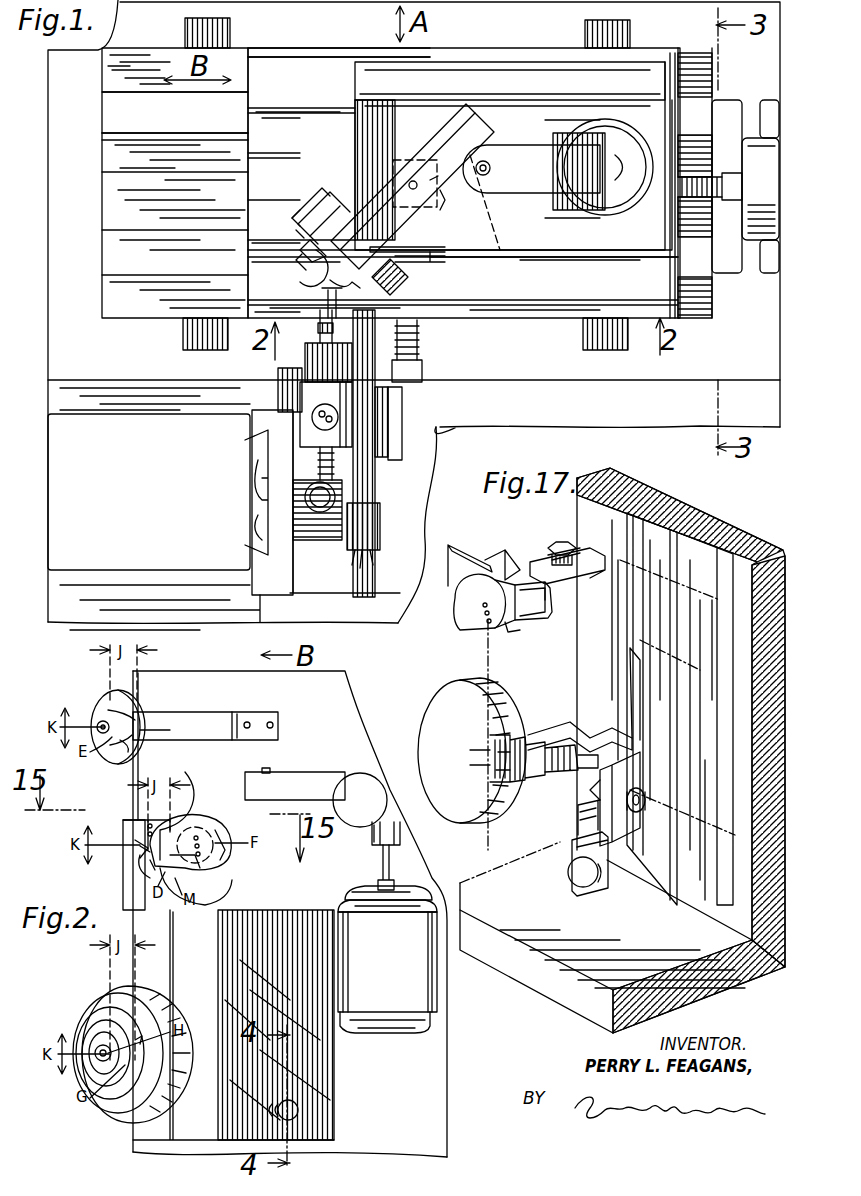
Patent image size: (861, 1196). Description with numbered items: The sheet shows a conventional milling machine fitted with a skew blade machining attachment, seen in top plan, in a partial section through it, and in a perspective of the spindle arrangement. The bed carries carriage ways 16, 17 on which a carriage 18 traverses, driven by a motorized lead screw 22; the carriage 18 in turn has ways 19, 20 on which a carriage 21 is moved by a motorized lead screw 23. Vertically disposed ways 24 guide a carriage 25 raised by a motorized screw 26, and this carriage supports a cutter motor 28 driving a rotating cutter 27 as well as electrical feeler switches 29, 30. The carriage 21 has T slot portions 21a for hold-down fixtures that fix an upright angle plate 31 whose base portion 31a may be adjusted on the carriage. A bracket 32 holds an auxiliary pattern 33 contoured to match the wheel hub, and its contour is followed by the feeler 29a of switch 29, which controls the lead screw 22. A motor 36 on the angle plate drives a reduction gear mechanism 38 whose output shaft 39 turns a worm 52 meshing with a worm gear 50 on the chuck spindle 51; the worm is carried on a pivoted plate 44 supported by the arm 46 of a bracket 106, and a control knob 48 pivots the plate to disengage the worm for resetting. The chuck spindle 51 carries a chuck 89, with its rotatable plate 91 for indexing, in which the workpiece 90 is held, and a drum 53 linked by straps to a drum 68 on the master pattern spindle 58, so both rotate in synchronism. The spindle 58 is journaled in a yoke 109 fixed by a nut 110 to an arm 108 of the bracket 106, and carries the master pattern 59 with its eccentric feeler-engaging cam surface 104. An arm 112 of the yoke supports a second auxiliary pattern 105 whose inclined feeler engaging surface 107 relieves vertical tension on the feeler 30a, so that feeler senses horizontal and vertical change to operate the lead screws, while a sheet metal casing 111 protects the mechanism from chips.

In FIG. 1, the carriage way 16 is at (600, 340).
In FIG. 1, the carriage way 17 is at (192, 340).
In FIG. 1, the carriage 18 is at (150, 52).
In FIG. 1, the way 19 is at (197, 125).
In FIG. 1, the way 20 is at (192, 240).
In FIG. 1, the carriage 21 is at (250, 172).
In FIG. 1, the T slot portions 21a is at (310, 60).
In FIG. 1, the motorized lead screw 22 is at (414, 336).
In FIG. 1, the motorized lead screw 23 is at (706, 178).
In FIG. 1, the vertically disposed ways 24 is at (258, 486).
In FIG. 1, the carriage 25 is at (280, 581).
In FIG. 1, the motorized screw 26 is at (335, 492).
In FIG. 1, the rotating cutter 27 is at (318, 326).
In FIG. 2, the rotating cutter 27 is at (98, 1058).
In FIG. 1, the cutter motor 28 is at (280, 388).
In FIG. 1, the electrical feeler switch 29 is at (310, 346).
In FIG. 1, the feeler 29a is at (325, 300).
In FIG. 2, the feeler 29a is at (106, 720).
In FIG. 1, the electrical feeler switch 30 is at (388, 290).
In FIG. 1, the feeler 30a is at (330, 282).
In FIG. 2, the feeler 30a is at (130, 850).
In FIG. 1, the angle plate 31 is at (455, 85).
In FIG. 17, the angle plate 31 is at (712, 526).
In FIG. 1, the base portion 31a is at (505, 255).
In FIG. 1, the bracket 32 is at (420, 136).
In FIG. 2, the bracket 32 is at (222, 700).
In FIG. 1, the auxiliary pattern 33 is at (305, 247).
In FIG. 2, the auxiliary pattern 33 is at (132, 700).
In FIG. 1, the motor 36 is at (608, 218).
In FIG. 2, the motor 36 is at (384, 948).
In FIG. 1, the reduction gear mechanism 38 is at (538, 150).
In FIG. 2, the reduction gear mechanism 38 is at (328, 778).
In FIG. 1, the output shaft 39 is at (483, 160).
In FIG. 2, the output shaft 39 is at (270, 768).
In FIG. 17, the plate 44 is at (608, 838).
In FIG. 17, the arm 46 is at (640, 790).
In FIG. 17, the control knob 48 is at (580, 887).
In FIG. 2, the control knob 48 is at (292, 1100).
In FIG. 17, the worm gear 50 is at (612, 760).
In FIG. 17, the chuck spindle 51 is at (516, 785).
In FIG. 17, the worm 52 is at (578, 820).
In FIG. 1, the drum 53 is at (442, 196).
In FIG. 17, the drum 53 is at (560, 780).
In FIG. 2, the master pattern spindle 58 is at (212, 870).
In FIG. 1, the master pattern 59 is at (440, 262).
In FIG. 17, the master pattern 59 is at (513, 636).
In FIG. 2, the master pattern 59 is at (208, 823).
In FIG. 1, the drum 68 is at (420, 208).
In FIG. 17, the drum 68 is at (538, 618).
In FIG. 1, the chuck 89 is at (312, 192).
In FIG. 17, the chuck 89 is at (460, 692).
In FIG. 2, the chuck 89 is at (178, 1006).
In FIG. 1, the workpiece 90 is at (301, 266).
In FIG. 2, the workpiece 90 is at (100, 1025).
In FIG. 2, the rotatable plate 91 is at (118, 1070).
In FIG. 2, the feeler-engaging cam surface 104 is at (186, 772).
In FIG. 1, the second auxiliary pattern 105 is at (440, 248).
In FIG. 17, the second auxiliary pattern 105 is at (455, 545).
In FIG. 2, the second auxiliary pattern 105 is at (126, 820).
In FIG. 17, the bracket 106 is at (565, 724).
In FIG. 2, the feeler engaging surface 107 is at (90, 880).
In FIG. 17, the arm 108 is at (578, 548).
In FIG. 17, the yoke 109 is at (505, 550).
In FIG. 17, the nut 110 is at (550, 546).
In FIG. 1, the sheet metal casing 111 is at (553, 232).
In FIG. 17, the sheet metal casing 111 is at (486, 646).
In FIG. 2, the sheet metal casing 111 is at (336, 1068).
In FIG. 17, the arm 112 is at (455, 600).